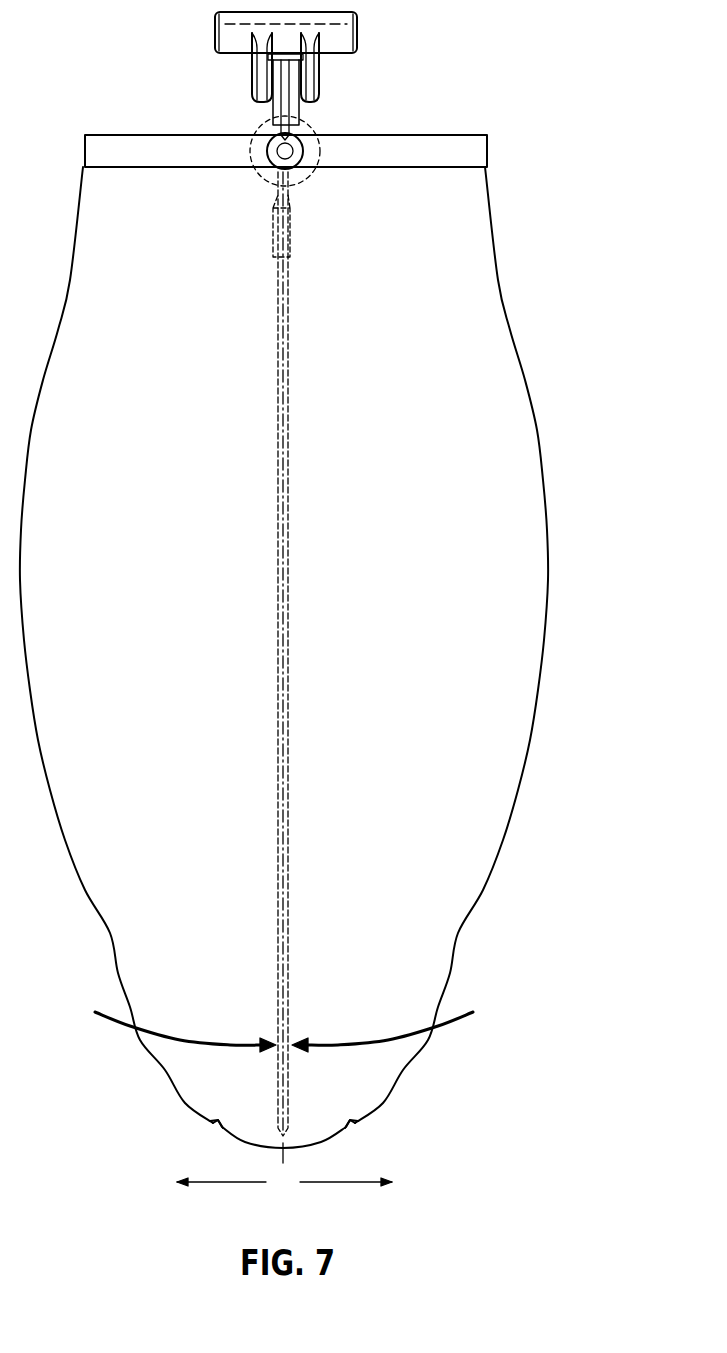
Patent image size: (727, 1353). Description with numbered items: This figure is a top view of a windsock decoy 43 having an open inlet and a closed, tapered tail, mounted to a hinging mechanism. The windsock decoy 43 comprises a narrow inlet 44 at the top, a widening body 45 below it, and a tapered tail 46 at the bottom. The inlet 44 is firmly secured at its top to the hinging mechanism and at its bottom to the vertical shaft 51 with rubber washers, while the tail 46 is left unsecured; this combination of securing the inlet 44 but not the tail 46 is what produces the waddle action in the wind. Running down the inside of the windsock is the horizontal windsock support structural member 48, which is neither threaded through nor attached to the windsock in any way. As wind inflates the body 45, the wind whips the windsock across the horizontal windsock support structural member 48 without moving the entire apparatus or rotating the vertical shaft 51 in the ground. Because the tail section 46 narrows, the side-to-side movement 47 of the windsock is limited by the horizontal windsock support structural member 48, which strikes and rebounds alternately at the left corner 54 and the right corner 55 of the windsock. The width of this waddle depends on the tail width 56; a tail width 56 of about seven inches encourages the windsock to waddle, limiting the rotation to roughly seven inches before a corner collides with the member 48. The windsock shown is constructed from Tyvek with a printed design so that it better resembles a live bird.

The windsock decoy 43 is at (285, 427).
The narrow inlet 44 is at (473, 155).
The widening body 45 is at (423, 783).
The tapered tail 46 is at (392, 1106).
The side-to-side movement 47 is at (284, 1021).
The horizontal windsock support structural member 48 is at (285, 644).
The vertical shaft 51 is at (285, 152).
The left corner 54 is at (217, 1124).
The right corner 55 is at (355, 1124).
The tail width 56 is at (284, 1182).